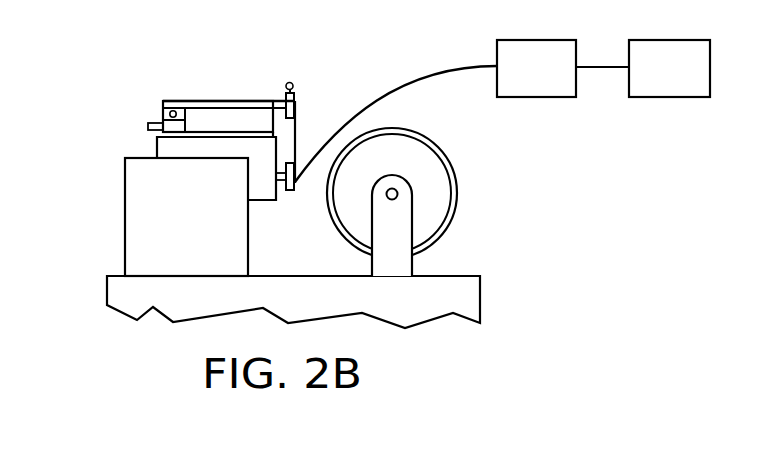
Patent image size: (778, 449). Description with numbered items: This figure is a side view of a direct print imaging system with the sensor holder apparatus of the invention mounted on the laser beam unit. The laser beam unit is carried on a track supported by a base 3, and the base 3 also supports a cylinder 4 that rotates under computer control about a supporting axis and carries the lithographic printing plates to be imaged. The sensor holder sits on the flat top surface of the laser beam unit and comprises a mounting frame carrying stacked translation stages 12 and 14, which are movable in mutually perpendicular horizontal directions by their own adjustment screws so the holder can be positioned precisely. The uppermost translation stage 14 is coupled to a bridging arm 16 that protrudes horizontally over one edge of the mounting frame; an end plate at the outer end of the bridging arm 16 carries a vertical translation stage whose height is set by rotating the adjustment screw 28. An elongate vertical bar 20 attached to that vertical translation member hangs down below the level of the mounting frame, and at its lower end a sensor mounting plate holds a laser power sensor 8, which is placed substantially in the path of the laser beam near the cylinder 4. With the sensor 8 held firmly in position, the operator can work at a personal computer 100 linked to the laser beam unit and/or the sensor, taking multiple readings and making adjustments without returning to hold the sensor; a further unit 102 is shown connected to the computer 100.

The base 3 is at (463, 292).
The cylinder 4 is at (440, 190).
The laser power sensor 8 is at (298, 172).
The translation stage 12 is at (175, 122).
The translation stage 14 is at (168, 114).
The bridging arm 16 is at (230, 101).
The vertical bar 20 is at (298, 135).
The adjustment screw 28 is at (291, 83).
The personal computer 100 is at (567, 80).
The output device 102 is at (699, 80).